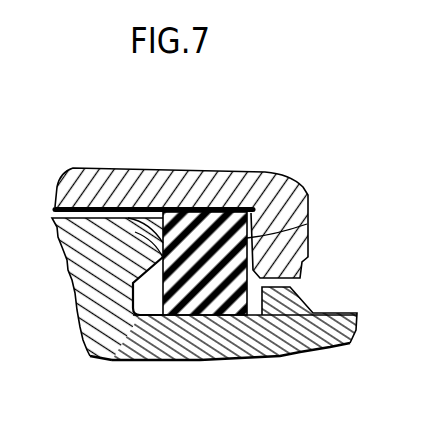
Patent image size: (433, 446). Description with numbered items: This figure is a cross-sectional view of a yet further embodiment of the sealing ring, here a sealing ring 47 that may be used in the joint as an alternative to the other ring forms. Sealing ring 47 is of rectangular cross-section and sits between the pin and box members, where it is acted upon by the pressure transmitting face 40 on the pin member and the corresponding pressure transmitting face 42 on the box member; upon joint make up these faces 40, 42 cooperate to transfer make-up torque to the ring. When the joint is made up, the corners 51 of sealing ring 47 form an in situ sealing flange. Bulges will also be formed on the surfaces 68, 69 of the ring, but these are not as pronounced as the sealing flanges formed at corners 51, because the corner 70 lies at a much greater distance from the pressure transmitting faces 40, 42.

The pressure transmitting face 40 is at (130, 217).
The pressure transmitting face 42 is at (307, 224).
The sealing ring 47 is at (214, 212).
The corners 51 is at (166, 210).
The surface 68 is at (140, 317).
The surface 69 is at (293, 295).
The corner 70 is at (162, 302).